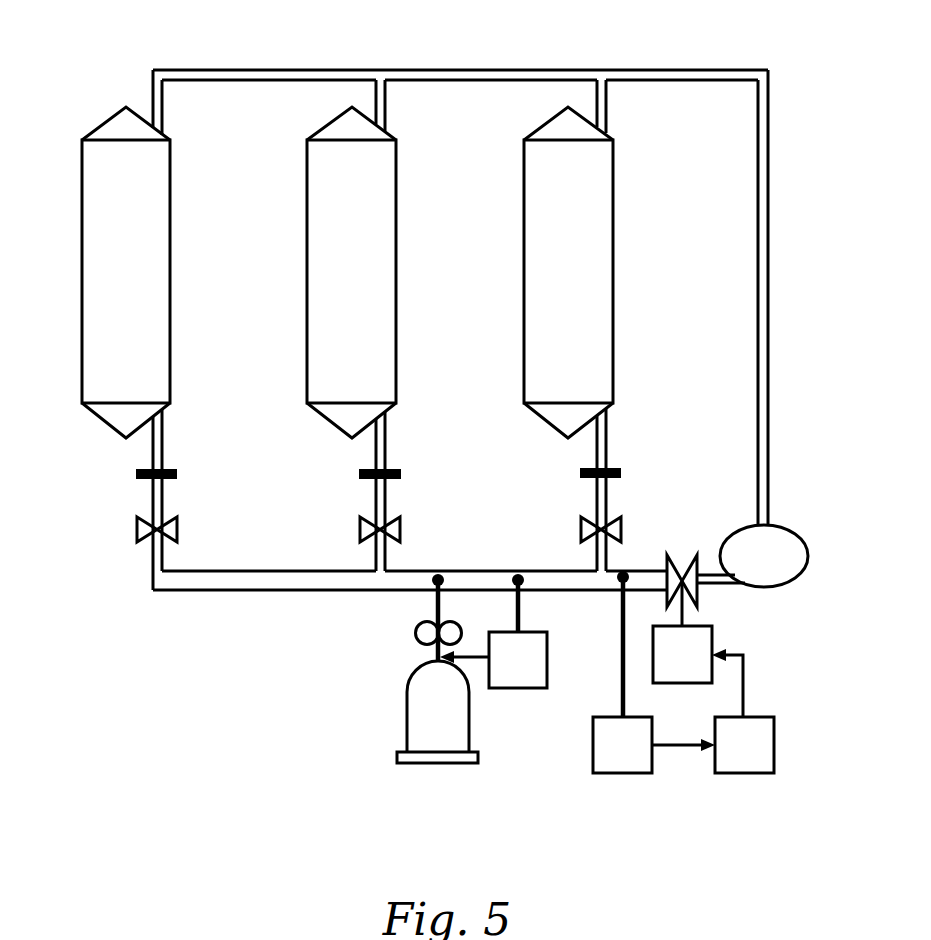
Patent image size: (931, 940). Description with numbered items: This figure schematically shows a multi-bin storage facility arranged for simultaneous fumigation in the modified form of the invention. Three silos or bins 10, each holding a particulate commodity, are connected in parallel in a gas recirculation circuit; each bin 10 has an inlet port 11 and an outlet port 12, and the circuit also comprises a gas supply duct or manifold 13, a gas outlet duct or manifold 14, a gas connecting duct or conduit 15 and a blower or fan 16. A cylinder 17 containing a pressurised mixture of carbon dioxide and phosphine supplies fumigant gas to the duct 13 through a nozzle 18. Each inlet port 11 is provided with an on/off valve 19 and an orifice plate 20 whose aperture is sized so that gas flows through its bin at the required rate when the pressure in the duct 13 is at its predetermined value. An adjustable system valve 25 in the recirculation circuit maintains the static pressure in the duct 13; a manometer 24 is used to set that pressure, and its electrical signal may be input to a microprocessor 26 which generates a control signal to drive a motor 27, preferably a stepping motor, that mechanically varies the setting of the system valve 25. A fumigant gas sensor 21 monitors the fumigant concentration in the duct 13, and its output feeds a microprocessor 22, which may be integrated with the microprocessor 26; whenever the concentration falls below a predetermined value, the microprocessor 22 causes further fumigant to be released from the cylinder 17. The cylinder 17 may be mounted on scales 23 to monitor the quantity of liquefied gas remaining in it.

The silo or bin 10 is at (152, 269).
The inlet port 11 is at (157, 452).
The outlet port 12 is at (157, 97).
The gas supply duct or manifold 13 is at (293, 579).
The gas outlet duct or manifold 14 is at (344, 72).
The gas connecting duct or conduit 15 is at (762, 335).
The blower or fan 16 is at (780, 538).
The cylinder 17 is at (407, 690).
The nozzle 18 is at (430, 581).
The on/off valve 19 is at (136, 530).
The orifice plate 20 is at (136, 475).
The fumigant gas sensor 21 is at (515, 572).
The microprocessor 22 is at (512, 677).
The scales 23 is at (395, 756).
The manometer 24 is at (623, 763).
The adjustable system valve 25 is at (682, 558).
The microprocessor 26 is at (748, 762).
The motor 27 is at (698, 645).